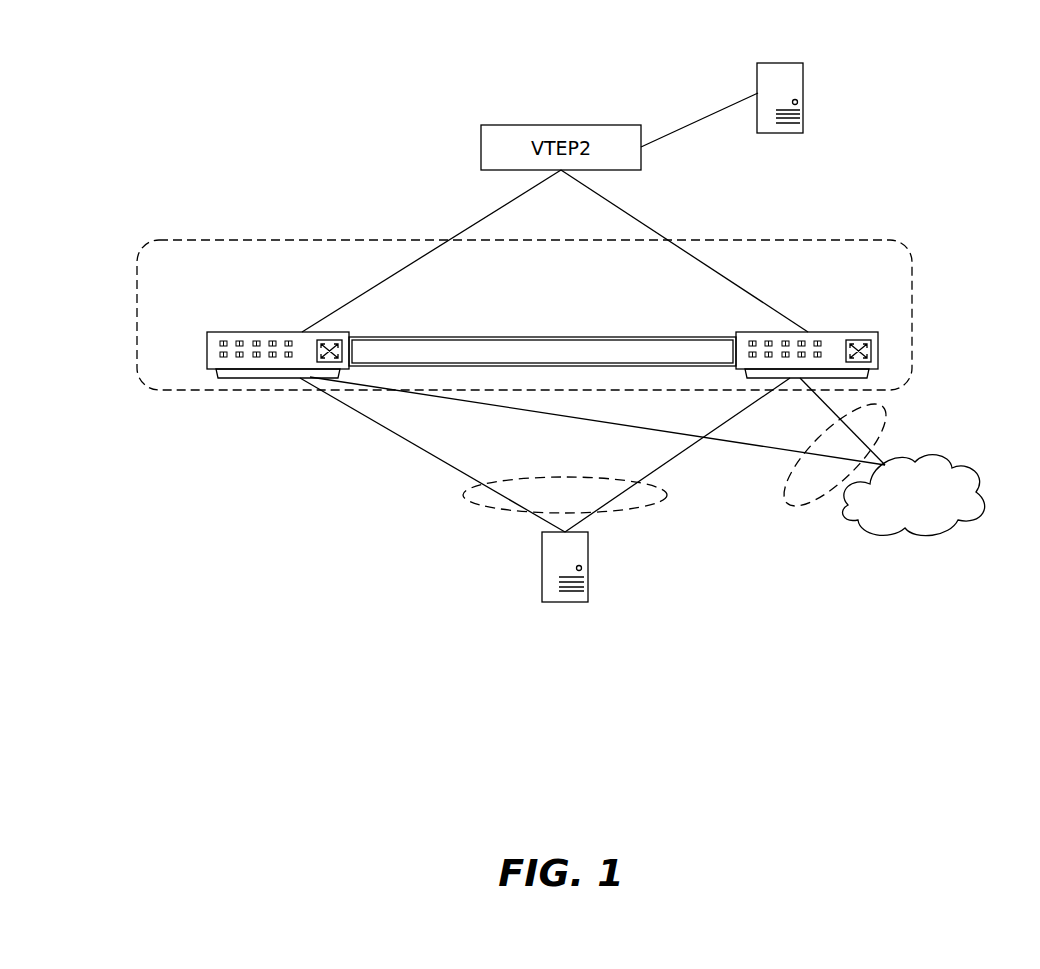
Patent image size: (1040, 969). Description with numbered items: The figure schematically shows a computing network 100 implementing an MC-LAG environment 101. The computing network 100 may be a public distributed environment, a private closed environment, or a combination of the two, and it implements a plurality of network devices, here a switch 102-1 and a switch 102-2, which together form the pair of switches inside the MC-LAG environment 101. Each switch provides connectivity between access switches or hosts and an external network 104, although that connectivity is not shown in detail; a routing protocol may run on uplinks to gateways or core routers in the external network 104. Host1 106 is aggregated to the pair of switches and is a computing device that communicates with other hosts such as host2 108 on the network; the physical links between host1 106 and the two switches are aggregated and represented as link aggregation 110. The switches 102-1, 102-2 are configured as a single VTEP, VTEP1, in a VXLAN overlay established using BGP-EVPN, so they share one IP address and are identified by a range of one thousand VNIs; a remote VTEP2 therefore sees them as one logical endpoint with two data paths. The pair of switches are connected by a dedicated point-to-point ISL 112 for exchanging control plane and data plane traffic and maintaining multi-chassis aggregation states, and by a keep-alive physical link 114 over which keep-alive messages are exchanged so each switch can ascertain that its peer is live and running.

The computing network 100 is at (1000, 78).
The MC-LAG environment 101 is at (913, 277).
The switch 102-1 is at (215, 332).
The switch 102-2 is at (825, 332).
The external network 104 is at (950, 462).
The host1 106 is at (588, 555).
The host2 108 is at (803, 110).
The aggregated physical links 110 is at (480, 505).
The ISL 112 is at (628, 366).
The keep-alive physical link 114 is at (690, 337).